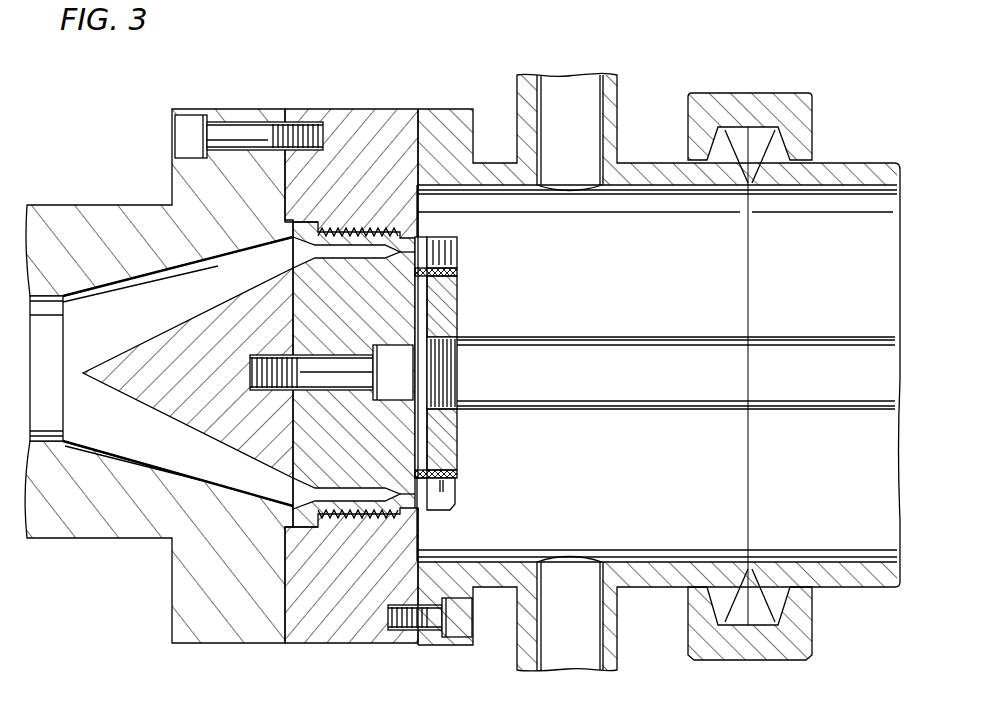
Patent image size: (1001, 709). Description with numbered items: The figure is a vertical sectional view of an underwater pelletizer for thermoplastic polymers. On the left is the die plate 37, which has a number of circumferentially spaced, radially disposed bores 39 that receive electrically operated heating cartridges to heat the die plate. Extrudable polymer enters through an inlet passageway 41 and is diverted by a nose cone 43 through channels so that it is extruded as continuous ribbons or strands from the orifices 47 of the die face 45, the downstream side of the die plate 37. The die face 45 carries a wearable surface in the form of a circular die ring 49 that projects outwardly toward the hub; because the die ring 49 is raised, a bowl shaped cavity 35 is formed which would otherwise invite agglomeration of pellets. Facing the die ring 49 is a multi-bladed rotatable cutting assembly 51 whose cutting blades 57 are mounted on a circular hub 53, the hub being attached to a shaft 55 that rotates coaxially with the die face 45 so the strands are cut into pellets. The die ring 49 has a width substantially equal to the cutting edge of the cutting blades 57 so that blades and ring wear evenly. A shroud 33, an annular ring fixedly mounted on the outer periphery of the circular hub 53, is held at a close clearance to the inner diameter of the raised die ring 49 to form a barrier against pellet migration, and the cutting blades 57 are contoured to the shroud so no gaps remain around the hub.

The shroud 33 is at (455, 272).
The bowl shaped cavity 35 is at (400, 236).
The die plate 37 is at (340, 138).
The bores 39 is at (138, 518).
The inlet passageway 41 is at (154, 419).
The nose cone 43 is at (163, 352).
The die face 45 is at (453, 505).
The orifices 47 is at (452, 243).
The die ring 49 is at (425, 237).
The cutting assembly 51 is at (520, 306).
The circular hub 53 is at (455, 440).
The shaft 55 is at (620, 397).
The cutting blades 57 is at (450, 492).